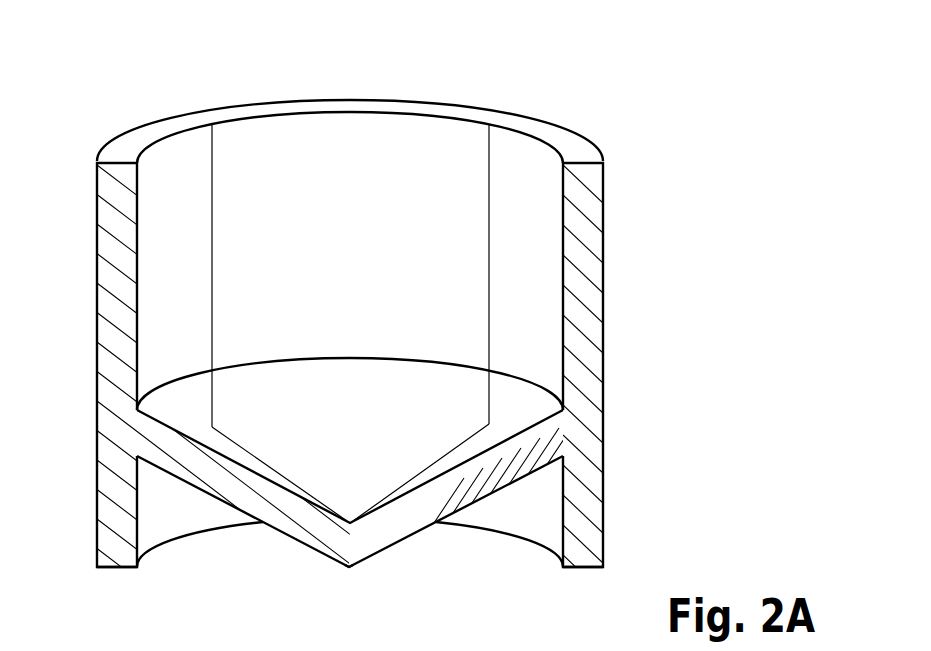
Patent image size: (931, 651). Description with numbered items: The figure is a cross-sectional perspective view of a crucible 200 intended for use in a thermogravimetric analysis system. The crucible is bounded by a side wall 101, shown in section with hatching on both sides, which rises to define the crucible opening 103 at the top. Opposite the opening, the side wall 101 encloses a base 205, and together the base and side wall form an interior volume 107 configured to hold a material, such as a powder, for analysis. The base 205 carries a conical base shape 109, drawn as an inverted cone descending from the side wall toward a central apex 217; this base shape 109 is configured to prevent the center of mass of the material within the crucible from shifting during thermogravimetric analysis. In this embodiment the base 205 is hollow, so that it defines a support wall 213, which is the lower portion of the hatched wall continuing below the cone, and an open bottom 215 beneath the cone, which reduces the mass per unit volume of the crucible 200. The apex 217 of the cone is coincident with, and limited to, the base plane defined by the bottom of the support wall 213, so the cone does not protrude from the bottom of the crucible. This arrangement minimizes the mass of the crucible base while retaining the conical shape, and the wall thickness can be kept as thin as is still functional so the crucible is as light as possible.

The crucible 200 is at (96, 114).
The side wall 101 is at (107, 285).
The crucible opening 103 is at (505, 130).
The interior volume 107 is at (370, 202).
The base shape 109 is at (382, 398).
The base 205 is at (145, 438).
The support wall 213 is at (112, 512).
The open bottom 215 is at (183, 535).
The apex 217 is at (349, 568).